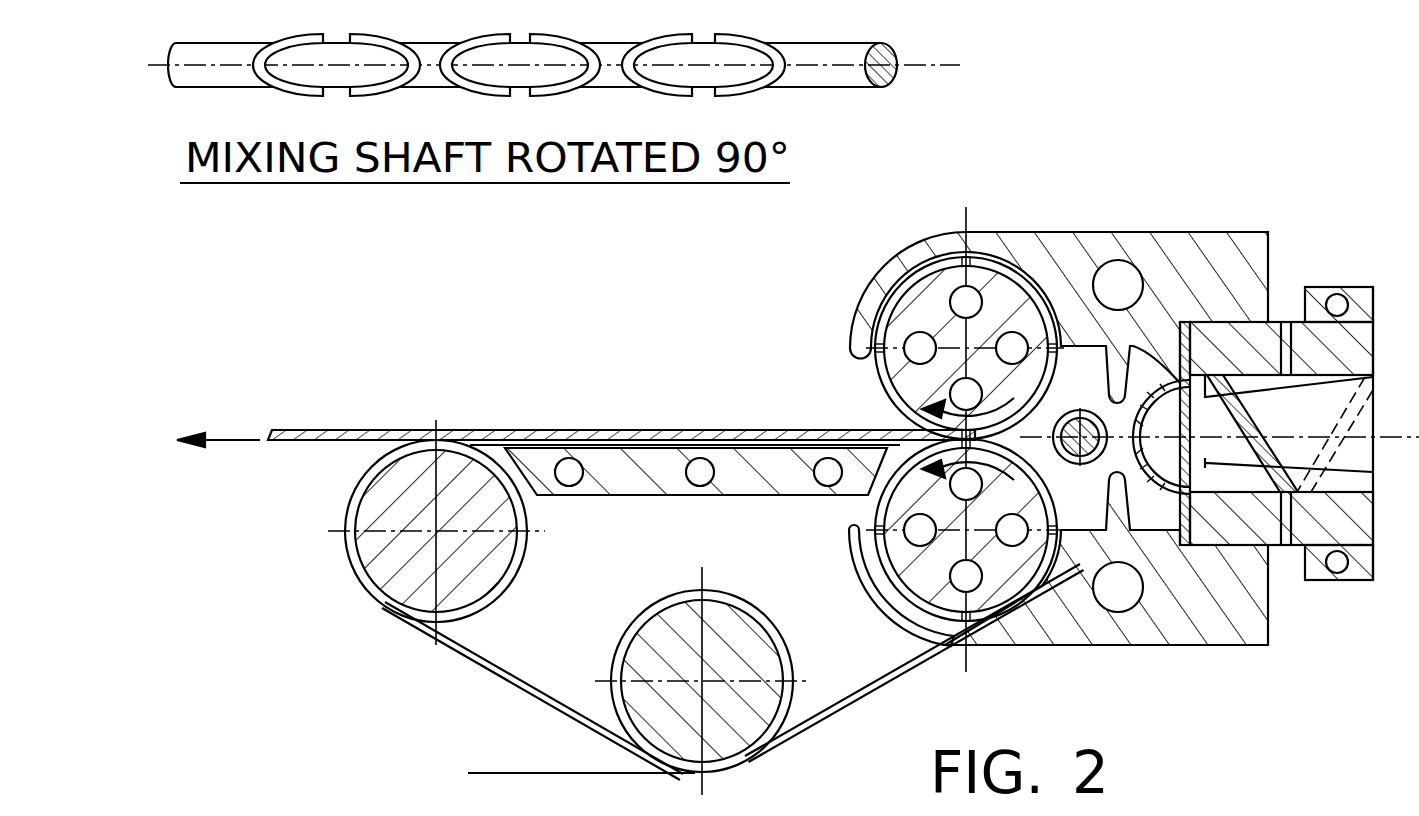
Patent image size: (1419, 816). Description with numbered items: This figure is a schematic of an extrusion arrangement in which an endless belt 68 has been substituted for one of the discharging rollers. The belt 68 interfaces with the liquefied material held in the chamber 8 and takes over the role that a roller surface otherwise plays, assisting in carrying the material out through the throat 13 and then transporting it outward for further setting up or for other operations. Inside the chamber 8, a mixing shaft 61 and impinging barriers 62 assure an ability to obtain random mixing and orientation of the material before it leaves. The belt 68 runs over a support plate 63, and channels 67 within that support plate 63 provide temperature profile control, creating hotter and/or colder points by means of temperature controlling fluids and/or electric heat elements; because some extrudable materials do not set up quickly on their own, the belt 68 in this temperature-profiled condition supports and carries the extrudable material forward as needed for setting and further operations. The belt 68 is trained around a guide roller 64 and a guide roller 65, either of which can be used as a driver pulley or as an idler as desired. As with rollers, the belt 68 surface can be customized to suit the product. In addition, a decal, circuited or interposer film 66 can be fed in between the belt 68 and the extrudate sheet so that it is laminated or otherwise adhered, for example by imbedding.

The chamber 8 is at (1207, 266).
The throat 13 is at (913, 428).
The mixing shaft 61 is at (1080, 396).
The impinging barriers 62 is at (1160, 367).
The support plate 63 is at (680, 496).
The guide roller 64 is at (517, 587).
The guide roller 65 is at (780, 630).
The decal, circuited or interposer film 66 is at (555, 779).
The channels 67 is at (587, 430).
The endless belt 68 is at (487, 670).